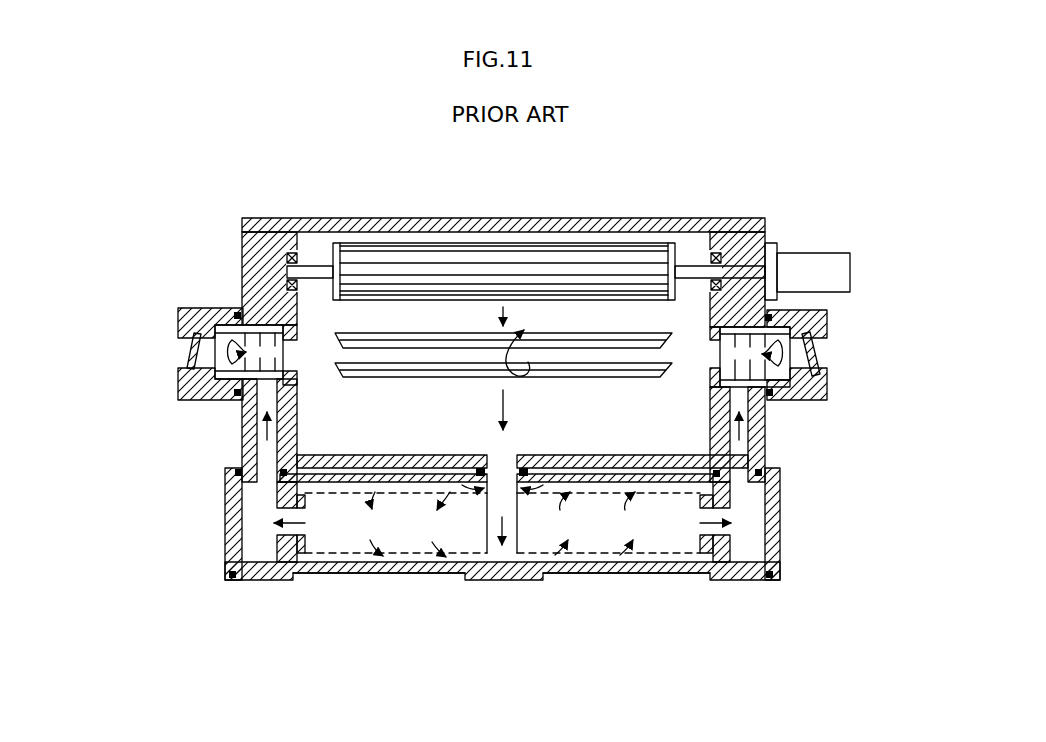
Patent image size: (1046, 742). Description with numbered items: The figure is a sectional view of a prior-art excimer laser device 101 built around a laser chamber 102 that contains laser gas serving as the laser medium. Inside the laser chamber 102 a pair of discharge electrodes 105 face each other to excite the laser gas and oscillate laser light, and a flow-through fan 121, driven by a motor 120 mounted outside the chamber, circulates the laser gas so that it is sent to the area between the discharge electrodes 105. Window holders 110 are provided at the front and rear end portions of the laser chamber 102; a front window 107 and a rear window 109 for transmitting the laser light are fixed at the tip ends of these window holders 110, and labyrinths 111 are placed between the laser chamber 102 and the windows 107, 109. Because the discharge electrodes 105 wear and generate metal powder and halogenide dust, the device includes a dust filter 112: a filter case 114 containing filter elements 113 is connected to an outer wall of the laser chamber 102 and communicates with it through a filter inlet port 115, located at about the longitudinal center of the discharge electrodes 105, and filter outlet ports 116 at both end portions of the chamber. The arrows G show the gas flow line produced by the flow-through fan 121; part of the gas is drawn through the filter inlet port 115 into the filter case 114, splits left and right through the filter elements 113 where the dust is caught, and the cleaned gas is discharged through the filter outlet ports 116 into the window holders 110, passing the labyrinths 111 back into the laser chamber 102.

The excimer laser device 101 is at (806, 203).
The laser chamber 102 is at (297, 218).
The discharge electrodes 105 is at (432, 333).
The front window 107 is at (191, 352).
The rear window 109 is at (817, 352).
The window holders 110 is at (182, 308).
The labyrinths 111 is at (236, 393).
The dust filter 112 is at (291, 603).
The filter elements 113 is at (343, 578).
The filter case 114 is at (430, 578).
The filter inlet port 115 is at (491, 455).
The filter outlet port 116 is at (265, 446).
The motor 120 is at (840, 253).
The flow-through fan 121 is at (425, 243).
The laser gas flow G is at (524, 322).